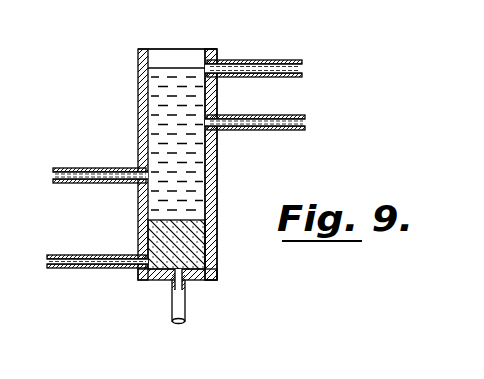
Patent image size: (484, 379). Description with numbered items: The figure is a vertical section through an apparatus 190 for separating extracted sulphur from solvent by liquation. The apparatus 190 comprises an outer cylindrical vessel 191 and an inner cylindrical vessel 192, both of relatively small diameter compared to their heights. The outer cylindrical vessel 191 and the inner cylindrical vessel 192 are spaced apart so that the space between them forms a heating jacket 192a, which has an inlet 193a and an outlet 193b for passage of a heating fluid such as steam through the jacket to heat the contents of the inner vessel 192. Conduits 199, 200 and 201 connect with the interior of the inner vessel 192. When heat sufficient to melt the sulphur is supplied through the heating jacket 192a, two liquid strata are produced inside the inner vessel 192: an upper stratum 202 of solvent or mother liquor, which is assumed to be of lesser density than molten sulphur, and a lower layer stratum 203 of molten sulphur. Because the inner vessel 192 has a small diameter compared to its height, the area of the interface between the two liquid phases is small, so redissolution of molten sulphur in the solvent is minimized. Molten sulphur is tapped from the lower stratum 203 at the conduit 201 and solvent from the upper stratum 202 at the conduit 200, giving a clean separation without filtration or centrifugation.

The apparatus 190 is at (221, 173).
The outer cylindrical vessel 191 is at (217, 205).
The inner cylindrical vessel 192 is at (138, 208).
The heating jacket 192a is at (217, 238).
The inlet 193a is at (83, 268).
The outlet 193b is at (262, 62).
The conduit 199 is at (108, 167).
The conduit 200 is at (267, 115).
The conduit 201 is at (186, 311).
The upper stratum 202 is at (172, 55).
The lower layer stratum 203 is at (202, 257).